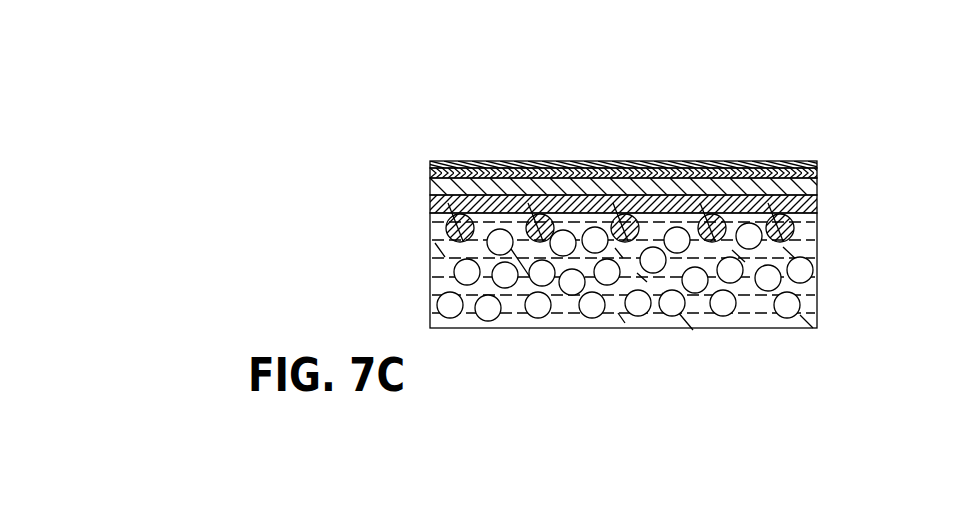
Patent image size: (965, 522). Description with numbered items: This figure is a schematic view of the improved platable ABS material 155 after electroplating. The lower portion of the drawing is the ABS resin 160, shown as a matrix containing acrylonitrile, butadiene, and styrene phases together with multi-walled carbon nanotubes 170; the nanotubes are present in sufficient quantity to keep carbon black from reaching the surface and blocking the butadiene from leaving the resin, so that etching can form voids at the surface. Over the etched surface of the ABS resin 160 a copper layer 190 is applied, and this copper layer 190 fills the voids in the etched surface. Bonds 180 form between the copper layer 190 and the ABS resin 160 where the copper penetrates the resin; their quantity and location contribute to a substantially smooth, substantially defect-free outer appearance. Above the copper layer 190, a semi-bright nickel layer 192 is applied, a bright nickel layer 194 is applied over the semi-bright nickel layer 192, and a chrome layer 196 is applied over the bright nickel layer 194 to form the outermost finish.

The improved platable ABS material 155 is at (658, 243).
The ABS resin 160 is at (510, 312).
The multi-walled carbon nanotubes 170 is at (742, 315).
The bonds 180 is at (455, 240).
The copper layer 190 is at (437, 210).
The semi-bright nickel layer 192 is at (815, 190).
The bright nickel layer 194 is at (818, 173).
The chrome layer 196 is at (810, 162).